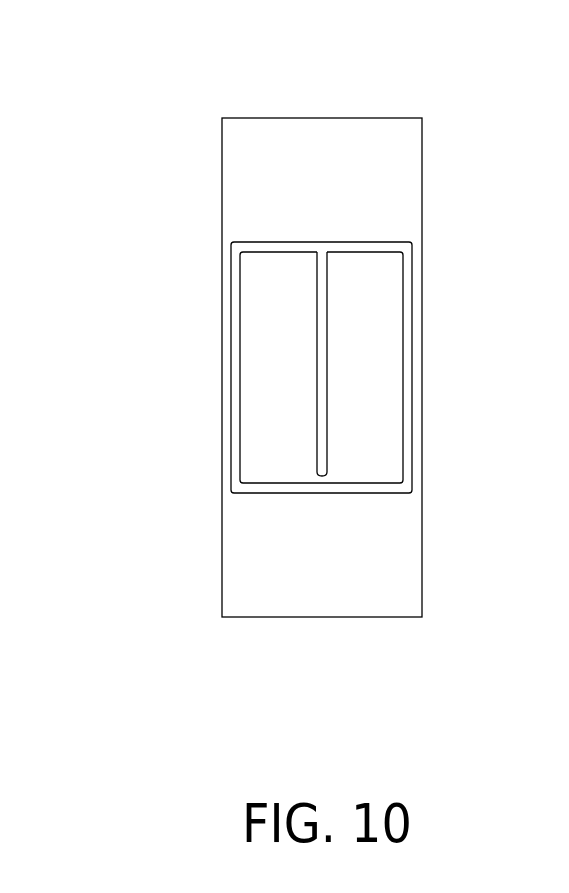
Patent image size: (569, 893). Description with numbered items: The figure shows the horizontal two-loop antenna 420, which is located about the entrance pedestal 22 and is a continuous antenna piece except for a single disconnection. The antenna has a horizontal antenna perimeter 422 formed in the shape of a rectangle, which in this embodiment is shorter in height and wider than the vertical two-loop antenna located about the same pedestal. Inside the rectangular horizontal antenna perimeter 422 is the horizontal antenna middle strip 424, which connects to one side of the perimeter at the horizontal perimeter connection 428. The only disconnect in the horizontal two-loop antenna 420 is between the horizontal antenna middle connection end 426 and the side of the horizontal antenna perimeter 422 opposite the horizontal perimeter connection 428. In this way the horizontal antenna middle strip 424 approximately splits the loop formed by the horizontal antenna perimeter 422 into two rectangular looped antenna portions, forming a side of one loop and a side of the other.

The horizontal two-loop antenna 420 is at (308, 310).
The entrance pedestal 22 is at (423, 600).
The horizontal perimeter connection 428 is at (320, 242).
The horizontal antenna perimeter 422 is at (286, 418).
The horizontal antenna middle strip 424 is at (322, 349).
The horizontal antenna middle connection end 426 is at (321, 476).